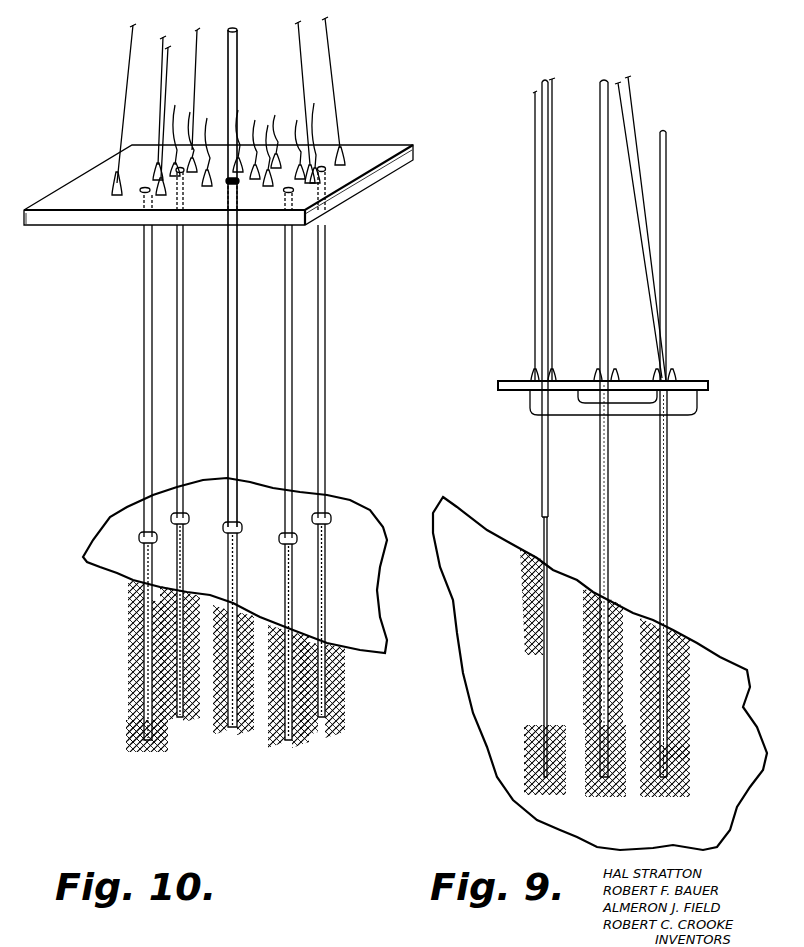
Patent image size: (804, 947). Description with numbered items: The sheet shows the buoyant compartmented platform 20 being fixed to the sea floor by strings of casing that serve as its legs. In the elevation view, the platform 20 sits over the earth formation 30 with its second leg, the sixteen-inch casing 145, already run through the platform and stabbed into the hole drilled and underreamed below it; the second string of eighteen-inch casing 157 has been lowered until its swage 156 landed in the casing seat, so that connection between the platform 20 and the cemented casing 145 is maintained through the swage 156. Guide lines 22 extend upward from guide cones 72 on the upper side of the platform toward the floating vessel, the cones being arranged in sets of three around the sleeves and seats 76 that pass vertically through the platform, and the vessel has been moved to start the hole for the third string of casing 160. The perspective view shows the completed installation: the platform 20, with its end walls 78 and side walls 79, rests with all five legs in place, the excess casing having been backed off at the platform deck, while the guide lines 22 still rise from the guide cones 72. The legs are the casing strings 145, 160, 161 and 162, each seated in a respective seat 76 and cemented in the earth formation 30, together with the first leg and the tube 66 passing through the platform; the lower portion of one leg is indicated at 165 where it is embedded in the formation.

In FIG. 10, the compartmented platform 20 is at (420, 166).
In FIG. 9, the compartmented platform 20 is at (487, 387).
In FIG. 10, the guide lines 22 is at (128, 95).
In FIG. 9, the guide lines 22 is at (552, 220).
In FIG. 10, the earth formation 30 is at (133, 597).
In FIG. 9, the earth formation 30 is at (502, 778).
In FIG. 10, the tube 66 is at (237, 250).
In FIG. 9, the tube 66 is at (608, 522).
In FIG. 10, the guide cones 72 is at (153, 172).
In FIG. 9, the guide cones 72 is at (534, 374).
In FIG. 10, the seats 76 is at (180, 125).
In FIG. 10, the end walls 78 is at (349, 197).
In FIG. 10, the side walls 79 is at (42, 218).
In FIG. 10, the second string of casing 145 is at (285, 355).
In FIG. 9, the second string of casing 145 is at (670, 440).
In FIG. 9, the swage 156 is at (675, 382).
In FIG. 9, the second string of 18-inch casing 157 is at (667, 222).
In FIG. 10, the third string of casing 160 is at (143, 356).
In FIG. 9, the third string of casing 160 is at (573, 427).
In FIG. 10, the fourth string of casing 161 is at (185, 253).
In FIG. 10, the fifth string of casing 162 is at (327, 268).
In FIG. 9, the tube lower portion 165 is at (659, 690).